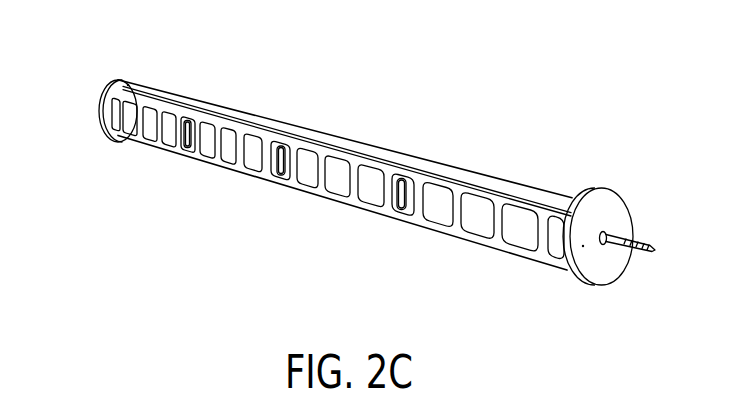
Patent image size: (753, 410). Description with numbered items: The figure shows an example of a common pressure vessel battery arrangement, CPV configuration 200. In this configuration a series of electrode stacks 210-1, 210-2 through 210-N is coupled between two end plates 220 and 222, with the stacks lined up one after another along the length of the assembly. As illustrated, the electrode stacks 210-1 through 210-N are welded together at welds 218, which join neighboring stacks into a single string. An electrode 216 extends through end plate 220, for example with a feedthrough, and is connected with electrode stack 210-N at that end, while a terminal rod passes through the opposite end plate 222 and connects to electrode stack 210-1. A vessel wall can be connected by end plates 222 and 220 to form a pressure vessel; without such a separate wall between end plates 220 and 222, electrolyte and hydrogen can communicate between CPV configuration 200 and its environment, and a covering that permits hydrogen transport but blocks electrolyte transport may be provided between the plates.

The CPV configuration 200 is at (213, 228).
The electrode stack 210-1 is at (148, 125).
The electrode stack 210-2 is at (242, 157).
The electrode stack 210-N is at (438, 202).
The electrode 216 is at (641, 243).
The weld 218 is at (187, 152).
The end plate 220 is at (620, 193).
The end plate 222 is at (108, 89).